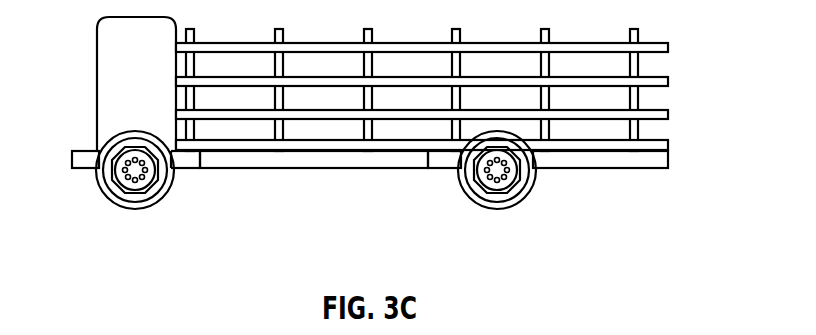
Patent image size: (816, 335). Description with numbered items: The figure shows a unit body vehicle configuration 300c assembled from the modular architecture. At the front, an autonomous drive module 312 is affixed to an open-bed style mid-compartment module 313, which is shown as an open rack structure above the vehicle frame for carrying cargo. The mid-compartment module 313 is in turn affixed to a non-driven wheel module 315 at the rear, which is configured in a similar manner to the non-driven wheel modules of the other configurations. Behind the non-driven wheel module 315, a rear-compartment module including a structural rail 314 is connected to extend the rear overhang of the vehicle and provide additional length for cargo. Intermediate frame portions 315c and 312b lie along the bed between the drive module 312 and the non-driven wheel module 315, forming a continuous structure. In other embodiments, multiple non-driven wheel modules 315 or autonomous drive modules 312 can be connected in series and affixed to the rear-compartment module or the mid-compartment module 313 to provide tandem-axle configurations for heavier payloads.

The unit body vehicle configuration 300c is at (387, 122).
The autonomous drive module 312 is at (107, 68).
The autonomous drive module 312b is at (443, 159).
The open-bed style mid-compartment module 313 is at (405, 80).
The structural rail 314 is at (628, 160).
The non-driven wheel module 315 is at (499, 183).
The non-driven wheel module 315c is at (315, 159).